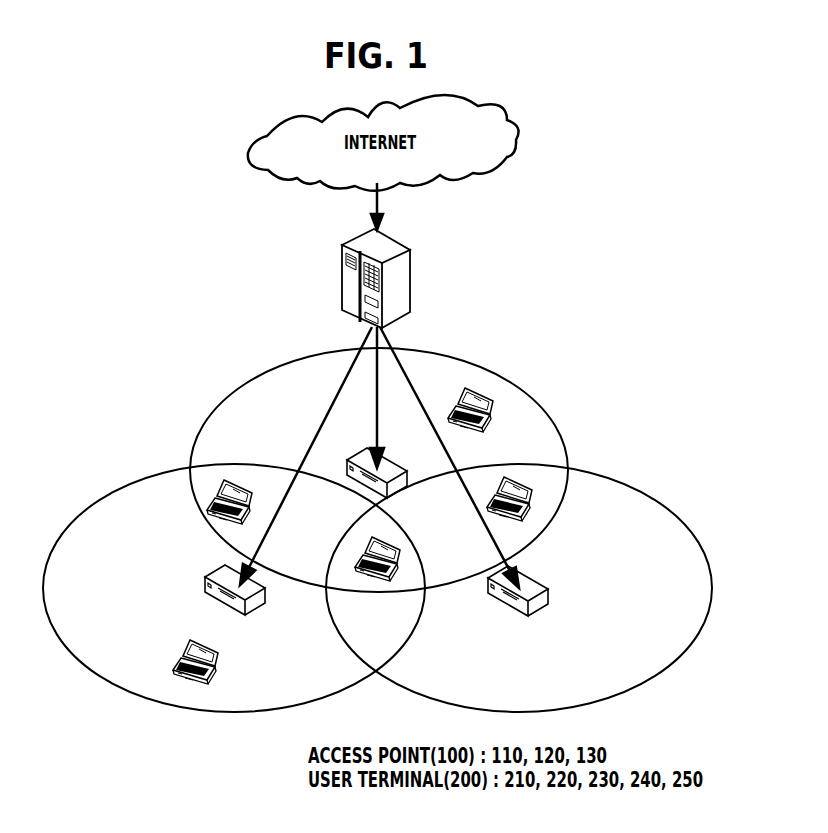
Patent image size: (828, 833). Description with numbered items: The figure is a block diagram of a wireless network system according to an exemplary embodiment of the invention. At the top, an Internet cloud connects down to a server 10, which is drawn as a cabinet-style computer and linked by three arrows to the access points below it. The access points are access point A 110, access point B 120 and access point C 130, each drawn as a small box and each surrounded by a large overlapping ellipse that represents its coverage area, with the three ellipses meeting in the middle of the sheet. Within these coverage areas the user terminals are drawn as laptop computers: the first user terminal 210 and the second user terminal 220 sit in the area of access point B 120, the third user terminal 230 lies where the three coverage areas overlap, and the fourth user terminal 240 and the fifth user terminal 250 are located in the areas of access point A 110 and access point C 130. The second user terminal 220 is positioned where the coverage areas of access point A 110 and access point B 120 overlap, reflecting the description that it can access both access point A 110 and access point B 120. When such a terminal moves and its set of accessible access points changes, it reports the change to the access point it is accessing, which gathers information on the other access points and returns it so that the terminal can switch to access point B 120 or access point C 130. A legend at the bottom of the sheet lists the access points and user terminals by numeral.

The server 10 is at (407, 287).
The access point A 110 is at (388, 488).
The access point B 120 is at (203, 583).
The access point C 130 is at (547, 602).
The user terminal 1 210 is at (183, 667).
The user terminal 2 220 is at (213, 500).
The user terminal 3 230 is at (388, 565).
The user terminal 4 240 is at (478, 402).
The user terminal 5 250 is at (520, 493).